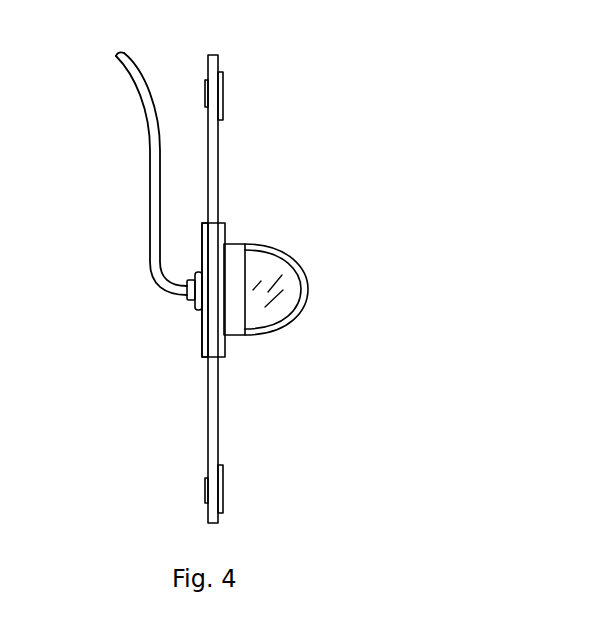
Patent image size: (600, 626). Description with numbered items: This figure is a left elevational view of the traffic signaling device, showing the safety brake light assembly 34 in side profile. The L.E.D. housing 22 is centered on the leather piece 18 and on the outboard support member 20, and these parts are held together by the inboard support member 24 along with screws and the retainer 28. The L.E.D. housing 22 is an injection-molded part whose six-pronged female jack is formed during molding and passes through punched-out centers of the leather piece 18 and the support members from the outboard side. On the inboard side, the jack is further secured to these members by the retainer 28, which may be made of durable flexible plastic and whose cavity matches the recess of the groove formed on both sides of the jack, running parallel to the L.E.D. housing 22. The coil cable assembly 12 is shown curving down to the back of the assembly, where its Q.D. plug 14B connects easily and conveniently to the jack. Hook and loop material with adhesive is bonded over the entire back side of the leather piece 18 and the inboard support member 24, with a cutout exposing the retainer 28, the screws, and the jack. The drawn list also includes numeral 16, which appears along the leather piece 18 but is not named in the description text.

The coil cable assembly 12 is at (142, 125).
The Q.D. plug 14B is at (187, 297).
The retaining clip 16 is at (222, 95).
The leather piece 18 is at (215, 168).
The outboard support member 20 is at (220, 345).
The L.E.D. housing 22 is at (292, 288).
The inboard support member 24 is at (205, 335).
The retainer 28 is at (192, 304).
The safety brake light assembly 34 is at (370, 157).